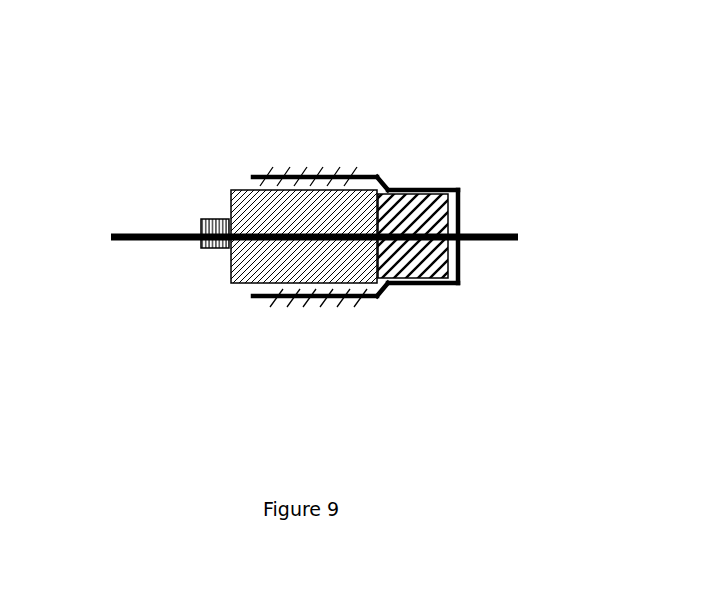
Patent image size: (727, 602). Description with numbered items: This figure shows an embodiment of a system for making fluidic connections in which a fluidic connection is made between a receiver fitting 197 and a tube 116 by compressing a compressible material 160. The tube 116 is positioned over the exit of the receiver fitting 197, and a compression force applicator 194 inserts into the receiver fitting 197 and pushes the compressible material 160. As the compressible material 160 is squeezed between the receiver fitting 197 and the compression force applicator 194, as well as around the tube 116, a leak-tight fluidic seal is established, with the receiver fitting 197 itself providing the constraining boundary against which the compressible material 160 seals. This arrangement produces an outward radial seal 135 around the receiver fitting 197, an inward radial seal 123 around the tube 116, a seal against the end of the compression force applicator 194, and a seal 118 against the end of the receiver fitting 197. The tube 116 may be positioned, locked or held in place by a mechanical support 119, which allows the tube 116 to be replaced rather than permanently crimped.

The tube 116 is at (255, 165).
The mechanical support 119 is at (186, 142).
The compression force applicator 194 is at (261, 298).
The outward radial seal 135 is at (436, 295).
The compressible material 160 is at (378, 158).
The inward radial seal 123 is at (363, 311).
The seal against the end of the receiver fitting 118 is at (543, 264).
The receiver fitting 197 is at (526, 152).